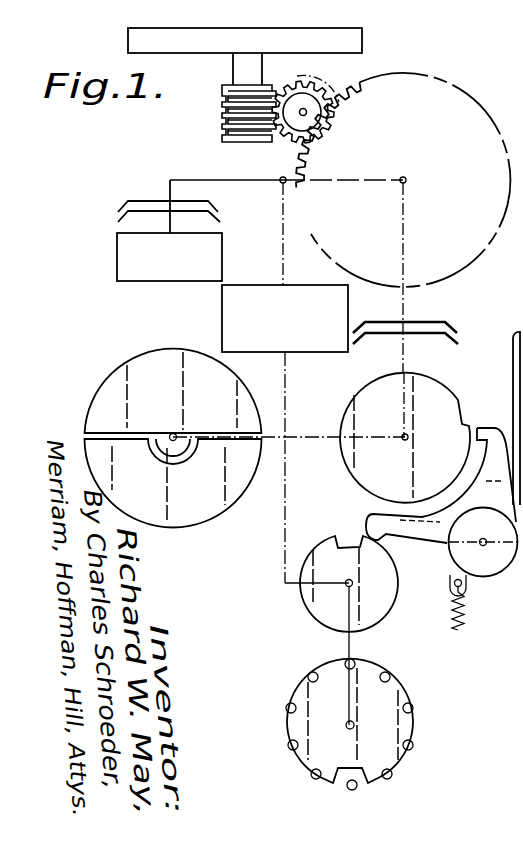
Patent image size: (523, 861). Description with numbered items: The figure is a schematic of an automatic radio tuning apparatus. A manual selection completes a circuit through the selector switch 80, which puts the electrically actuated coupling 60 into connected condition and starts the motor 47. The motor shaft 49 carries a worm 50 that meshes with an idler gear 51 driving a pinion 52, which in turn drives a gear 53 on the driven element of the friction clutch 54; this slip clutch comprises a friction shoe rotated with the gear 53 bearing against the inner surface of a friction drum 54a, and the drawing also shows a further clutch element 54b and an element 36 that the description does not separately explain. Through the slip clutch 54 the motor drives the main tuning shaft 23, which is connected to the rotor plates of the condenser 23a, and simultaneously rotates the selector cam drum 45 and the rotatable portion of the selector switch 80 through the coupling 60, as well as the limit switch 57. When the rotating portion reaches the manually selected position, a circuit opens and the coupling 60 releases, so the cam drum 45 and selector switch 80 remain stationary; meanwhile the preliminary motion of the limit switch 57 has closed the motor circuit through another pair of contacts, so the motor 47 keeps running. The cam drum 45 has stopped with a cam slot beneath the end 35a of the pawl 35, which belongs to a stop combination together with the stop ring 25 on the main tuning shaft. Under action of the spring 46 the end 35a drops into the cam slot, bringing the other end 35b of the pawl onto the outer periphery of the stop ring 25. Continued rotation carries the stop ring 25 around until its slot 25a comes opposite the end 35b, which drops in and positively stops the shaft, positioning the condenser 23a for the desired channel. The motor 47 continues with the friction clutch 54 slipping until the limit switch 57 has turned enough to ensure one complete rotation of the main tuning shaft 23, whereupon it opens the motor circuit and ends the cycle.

The motor 47 is at (362, 45).
The motor shaft 49 is at (233, 70).
The worm 50 is at (222, 122).
The idler gear 51 is at (298, 80).
The pinion 52 is at (297, 130).
The gear 53 is at (355, 85).
The main tuning shaft 23 is at (406, 178).
The limit switch 57 is at (117, 260).
The electrically actuated coupling 60 is at (222, 315).
The friction clutch 54 is at (463, 327).
The friction drum 54a is at (427, 336).
The coupling upper member 54b is at (417, 322).
The condenser 23a is at (118, 372).
The stop ring 25 is at (370, 392).
The slot 25a is at (466, 412).
The pawl 35 is at (455, 518).
The end of the pawl 35a is at (368, 527).
The other end of the pawl 35b is at (487, 428).
The roller 36 is at (484, 546).
The spring 46 is at (451, 613).
The selector cam drum 45 is at (312, 603).
The selector switch 80 is at (292, 691).